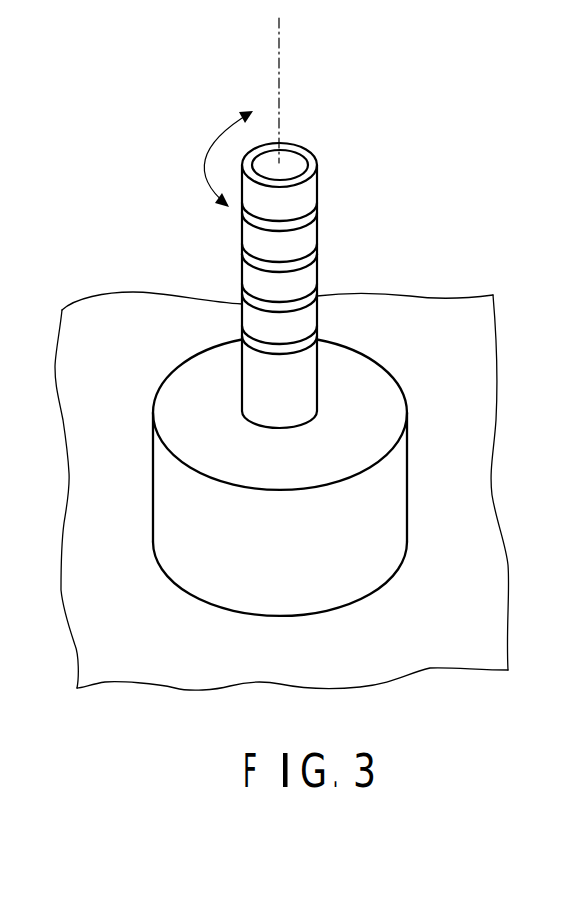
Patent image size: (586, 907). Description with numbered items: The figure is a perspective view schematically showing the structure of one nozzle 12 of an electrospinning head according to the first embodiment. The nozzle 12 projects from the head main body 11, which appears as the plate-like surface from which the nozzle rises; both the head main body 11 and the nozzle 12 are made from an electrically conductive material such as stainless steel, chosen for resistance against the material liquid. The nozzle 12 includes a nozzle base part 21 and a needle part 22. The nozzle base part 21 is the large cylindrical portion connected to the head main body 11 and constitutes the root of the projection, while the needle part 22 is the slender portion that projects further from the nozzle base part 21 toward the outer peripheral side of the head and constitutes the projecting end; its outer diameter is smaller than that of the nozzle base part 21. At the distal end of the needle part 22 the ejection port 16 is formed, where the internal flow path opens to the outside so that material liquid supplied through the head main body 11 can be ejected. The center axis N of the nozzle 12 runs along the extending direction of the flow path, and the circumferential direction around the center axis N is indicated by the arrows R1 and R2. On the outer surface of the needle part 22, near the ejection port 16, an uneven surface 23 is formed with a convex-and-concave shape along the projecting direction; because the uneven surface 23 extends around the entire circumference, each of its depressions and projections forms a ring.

The head main body 11 is at (404, 579).
The nozzle 12 is at (350, 271).
The ejection port 16 is at (290, 163).
The nozzle base part 21 is at (390, 506).
The needle part 22 is at (307, 407).
The uneven surface 23 is at (307, 189).
The center axis N is at (282, 80).
The arrow indicating circumferential direction R1 is at (228, 147).
The arrow indicating circumferential direction R2 is at (209, 212).